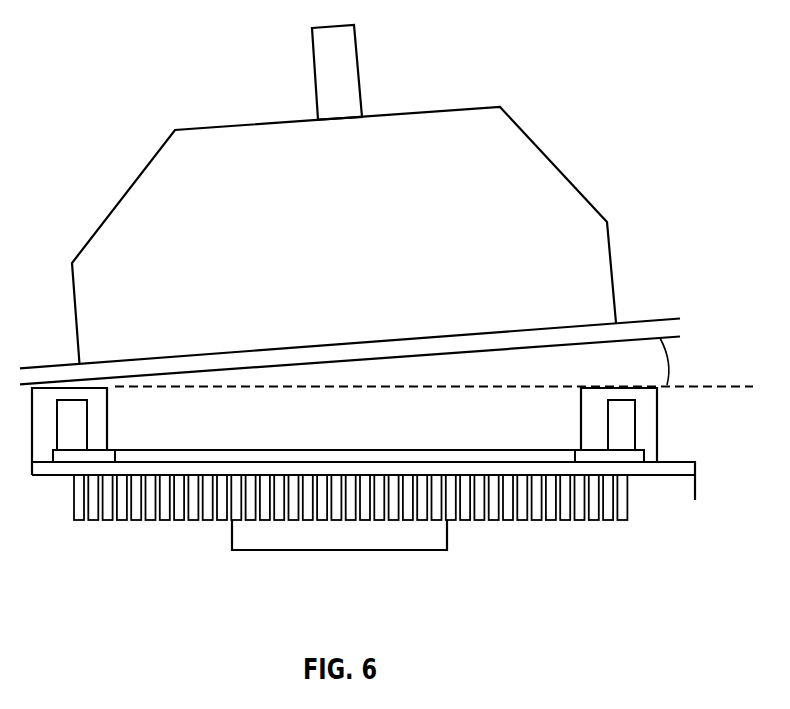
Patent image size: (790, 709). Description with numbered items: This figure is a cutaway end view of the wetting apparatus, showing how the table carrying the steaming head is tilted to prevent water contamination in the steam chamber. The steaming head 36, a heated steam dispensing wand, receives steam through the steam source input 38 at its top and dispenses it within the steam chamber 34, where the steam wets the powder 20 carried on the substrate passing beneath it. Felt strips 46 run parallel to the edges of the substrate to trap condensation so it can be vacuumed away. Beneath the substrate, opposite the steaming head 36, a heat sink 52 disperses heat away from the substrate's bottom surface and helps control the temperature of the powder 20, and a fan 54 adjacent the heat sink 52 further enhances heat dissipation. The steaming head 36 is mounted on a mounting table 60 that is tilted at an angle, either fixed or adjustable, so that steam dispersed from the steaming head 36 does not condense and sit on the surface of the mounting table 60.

The powder 20 is at (492, 457).
The steam chamber 34 is at (386, 410).
The steaming head 36 is at (537, 143).
The steam source input 38 is at (360, 62).
The felt strips 46 is at (65, 463).
The heat sink 52 is at (122, 517).
The fan 54 is at (298, 542).
The mounting table 60 is at (638, 327).